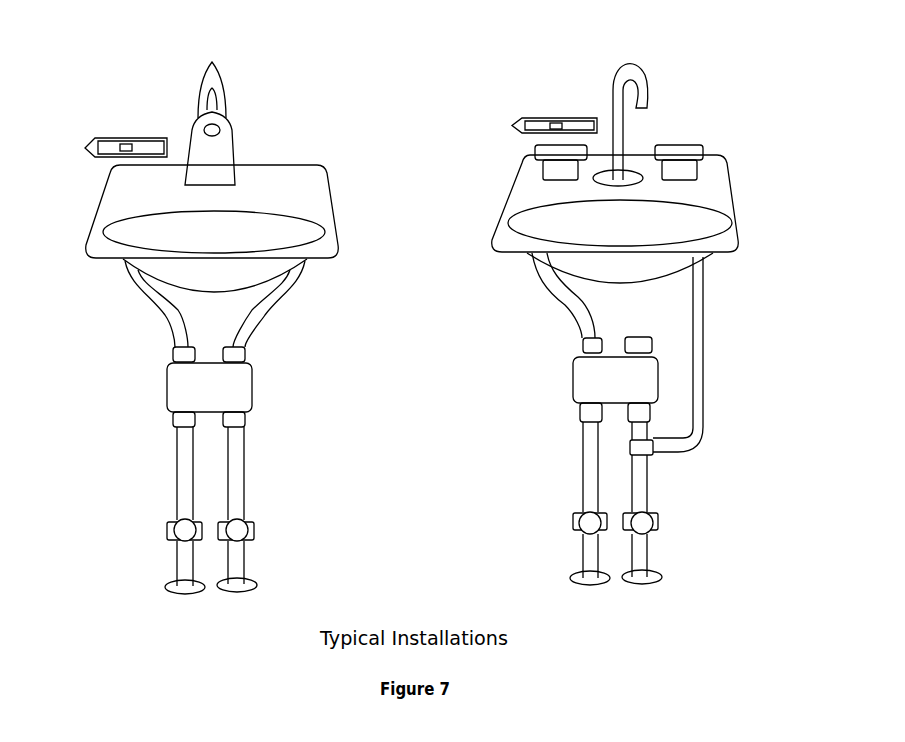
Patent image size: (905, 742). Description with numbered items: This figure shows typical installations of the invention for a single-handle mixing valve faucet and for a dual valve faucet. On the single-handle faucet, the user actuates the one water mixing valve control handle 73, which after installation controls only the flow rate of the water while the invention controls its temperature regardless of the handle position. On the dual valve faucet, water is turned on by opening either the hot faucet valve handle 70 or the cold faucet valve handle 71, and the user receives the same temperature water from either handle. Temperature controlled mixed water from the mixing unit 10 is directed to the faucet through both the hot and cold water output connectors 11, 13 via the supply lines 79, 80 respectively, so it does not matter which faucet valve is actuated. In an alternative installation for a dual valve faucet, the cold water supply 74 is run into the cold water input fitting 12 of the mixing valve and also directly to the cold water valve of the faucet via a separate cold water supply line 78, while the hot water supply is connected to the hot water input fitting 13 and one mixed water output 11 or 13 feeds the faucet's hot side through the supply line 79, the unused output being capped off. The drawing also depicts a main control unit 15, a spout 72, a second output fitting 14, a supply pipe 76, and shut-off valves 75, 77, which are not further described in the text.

The mixing unit 10 is at (412, 383).
The hot water output connector 11 is at (722, 290).
The cold water input fitting 12 is at (722, 368).
The cold water output connector 13 is at (520, 292).
The cold water outlet fitting 14 is at (505, 415).
The main control unit 15 is at (341, 89).
The hot faucet valve handle 70 is at (753, 107).
The cold faucet valve handle 71 is at (473, 122).
The spout 72 is at (705, 32).
The water mixing valve control handle 73 is at (305, 92).
The cold water supply 74 is at (722, 447).
The hot water shut-off valve 75 is at (723, 522).
The cold water supply pipe 76 is at (505, 460).
The cold water shut-off valve 77 is at (505, 522).
The separate cold water supply line 78 is at (768, 337).
The supply line 79 is at (72, 307).
The supply line 80 is at (352, 292).